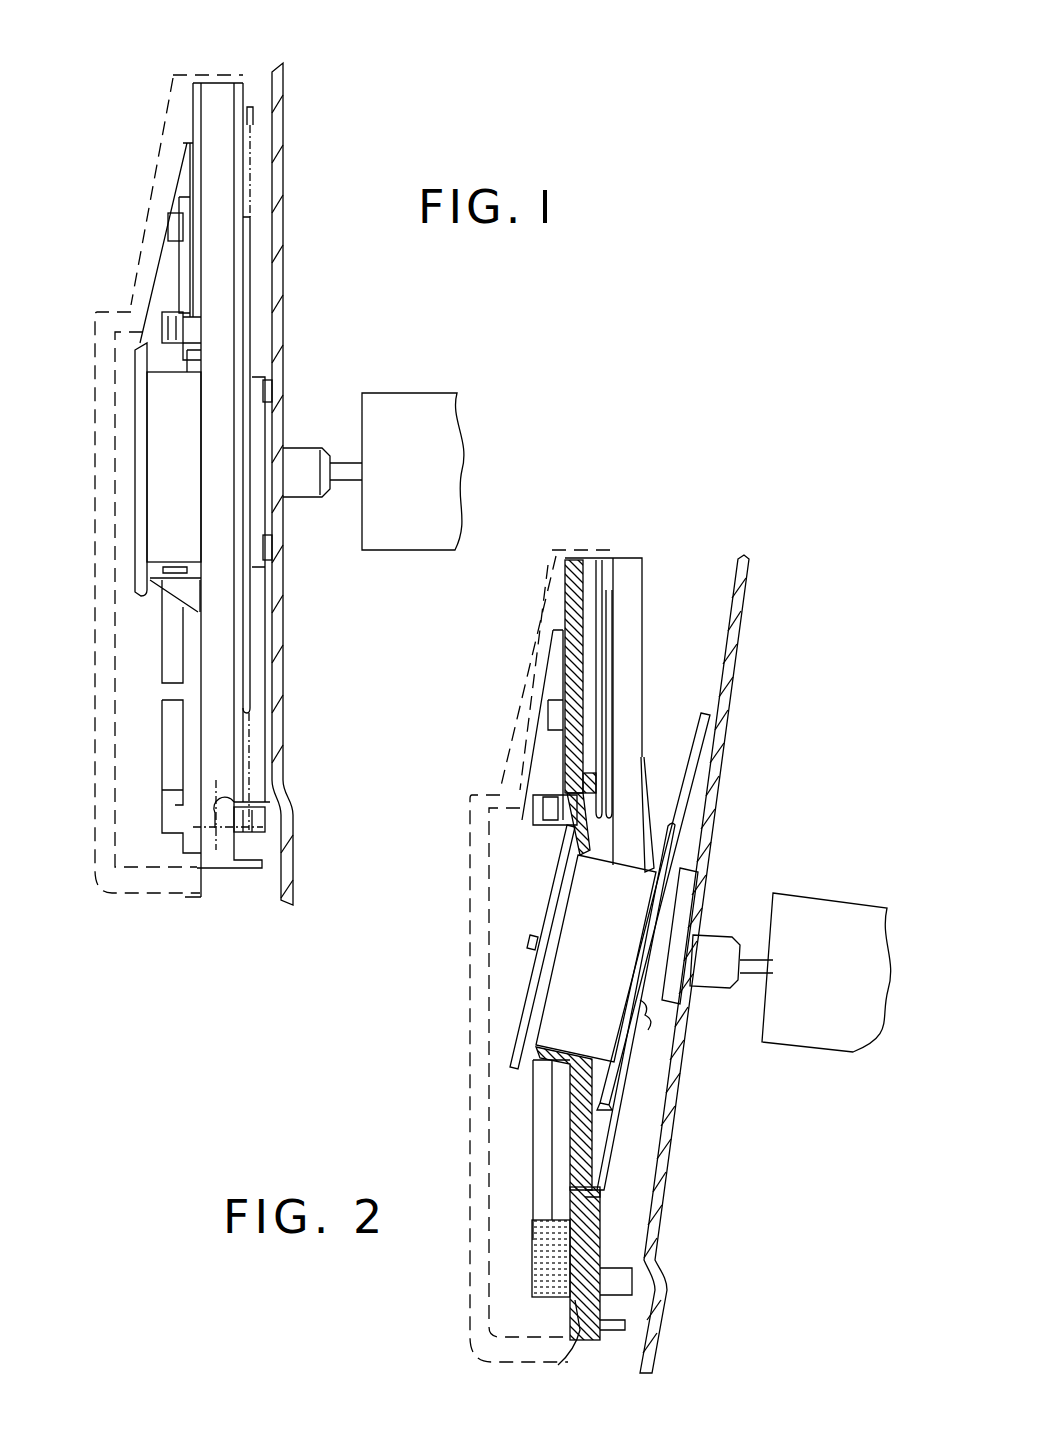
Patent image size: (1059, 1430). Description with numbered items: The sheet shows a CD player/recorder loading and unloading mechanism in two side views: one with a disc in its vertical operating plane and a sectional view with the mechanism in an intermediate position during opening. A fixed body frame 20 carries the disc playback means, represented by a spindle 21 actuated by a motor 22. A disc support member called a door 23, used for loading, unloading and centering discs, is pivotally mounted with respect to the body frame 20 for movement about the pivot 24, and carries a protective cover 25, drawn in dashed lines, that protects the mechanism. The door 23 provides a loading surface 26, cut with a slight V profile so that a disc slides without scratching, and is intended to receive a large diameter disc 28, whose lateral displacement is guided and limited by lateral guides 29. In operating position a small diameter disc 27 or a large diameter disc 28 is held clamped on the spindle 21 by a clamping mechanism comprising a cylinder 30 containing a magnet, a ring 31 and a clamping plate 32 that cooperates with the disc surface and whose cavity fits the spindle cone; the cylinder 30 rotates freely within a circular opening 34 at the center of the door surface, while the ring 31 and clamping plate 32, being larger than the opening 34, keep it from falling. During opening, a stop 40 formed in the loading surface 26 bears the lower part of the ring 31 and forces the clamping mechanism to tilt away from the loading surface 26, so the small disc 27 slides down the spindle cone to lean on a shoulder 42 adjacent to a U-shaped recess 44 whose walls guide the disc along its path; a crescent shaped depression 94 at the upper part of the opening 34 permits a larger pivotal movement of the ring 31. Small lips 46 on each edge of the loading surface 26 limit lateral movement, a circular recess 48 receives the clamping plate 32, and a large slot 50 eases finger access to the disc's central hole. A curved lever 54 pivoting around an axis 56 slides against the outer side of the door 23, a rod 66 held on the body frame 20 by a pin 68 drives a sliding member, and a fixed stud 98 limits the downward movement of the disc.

In FIG. 1, the body frame 20 is at (280, 160).
In FIG. 2, the body frame 20 is at (694, 964).
In FIG. 1, the spindle 21 is at (255, 440).
In FIG. 2, the spindle 21 is at (680, 893).
In FIG. 1, the motor 22 is at (445, 408).
In FIG. 2, the motor 22 is at (845, 1023).
In FIG. 1, the door 23 is at (185, 52).
In FIG. 2, the door 23 is at (650, 482).
In FIG. 1, the pivot 24 is at (270, 802).
In FIG. 2, the pivot 24 is at (575, 1320).
In FIG. 1, the protective cover 25 is at (110, 655).
In FIG. 1, the loading surface 26 is at (223, 348).
In FIG. 2, the loading surface 26 is at (590, 1340).
In FIG. 1, the small diameter disc 27 is at (250, 272).
In FIG. 2, the small diameter disc 27 is at (600, 1157).
In FIG. 1, the large diameter disc 28 is at (253, 120).
In FIG. 1, the lateral guides 29 is at (258, 217).
In FIG. 2, the lateral guides 29 is at (628, 640).
In FIG. 1, the cylinder 30 is at (170, 398).
In FIG. 2, the cylinder 30 is at (596, 958).
In FIG. 1, the ring 31 is at (140, 455).
In FIG. 2, the ring 31 is at (525, 993).
In FIG. 1, the clamping plate 32 is at (266, 398).
In FIG. 2, the clamping plate 32 is at (600, 1093).
In FIG. 2, the circular opening 34 is at (580, 832).
In FIG. 2, the stop 40 is at (530, 1077).
In FIG. 2, the shoulder 42 is at (600, 1190).
In FIG. 2, the U-shaped recess 44 is at (600, 1125).
In FIG. 2, the small lips 46 is at (608, 612).
In FIG. 2, the circular recess 48 is at (575, 805).
In FIG. 2, the large slot 50 is at (585, 578).
In FIG. 2, the curved lever 54 is at (530, 1265).
In FIG. 2, the axis 56 is at (528, 942).
In FIG. 2, the rod 66 is at (663, 833).
In FIG. 2, the pin 68 is at (648, 1012).
In FIG. 2, the crescent shaped depression 94 is at (580, 832).
In FIG. 2, the fixed stud 98 is at (620, 1283).